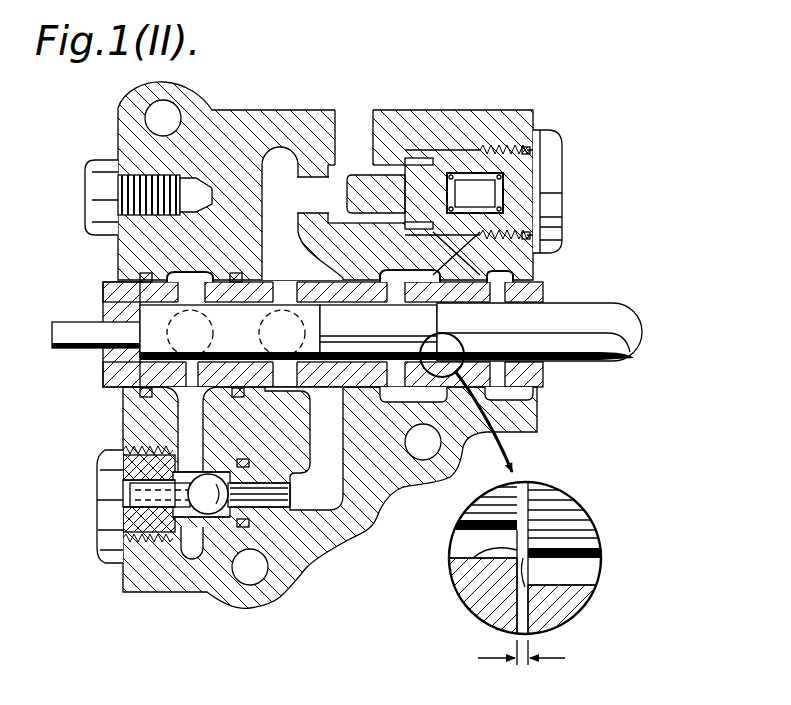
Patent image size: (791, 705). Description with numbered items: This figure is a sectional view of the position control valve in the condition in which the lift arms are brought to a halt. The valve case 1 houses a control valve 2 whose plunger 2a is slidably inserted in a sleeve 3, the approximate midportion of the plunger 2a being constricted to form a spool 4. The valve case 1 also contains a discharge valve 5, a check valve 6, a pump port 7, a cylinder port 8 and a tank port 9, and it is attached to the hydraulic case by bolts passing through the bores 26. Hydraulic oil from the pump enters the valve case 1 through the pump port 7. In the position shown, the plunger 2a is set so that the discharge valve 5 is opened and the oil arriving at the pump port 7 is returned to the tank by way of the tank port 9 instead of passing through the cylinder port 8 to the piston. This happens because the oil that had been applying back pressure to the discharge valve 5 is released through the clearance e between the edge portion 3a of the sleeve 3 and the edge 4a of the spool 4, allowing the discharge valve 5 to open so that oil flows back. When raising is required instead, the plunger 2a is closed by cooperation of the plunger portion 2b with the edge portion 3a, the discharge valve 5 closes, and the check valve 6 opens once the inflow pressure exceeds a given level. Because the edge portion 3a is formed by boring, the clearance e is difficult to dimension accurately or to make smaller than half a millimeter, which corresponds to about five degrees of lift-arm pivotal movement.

The valve case 1 is at (349, 541).
The control valve 2 is at (429, 103).
The plunger 2a is at (628, 307).
The plunger portion 2b is at (550, 340).
The sleeve 3 is at (545, 296).
The edge portion of the sleeve 3a is at (440, 270).
The spool 4 is at (343, 388).
The edge of the spool 4a is at (435, 308).
The discharge valve 5 is at (400, 165).
The check valve 6 is at (189, 542).
The pump port 7 is at (283, 322).
The cylinder port 8 is at (190, 388).
The tank port 9 is at (352, 118).
The bores for the bolts 26 is at (176, 108).
The clearance e is at (521, 664).